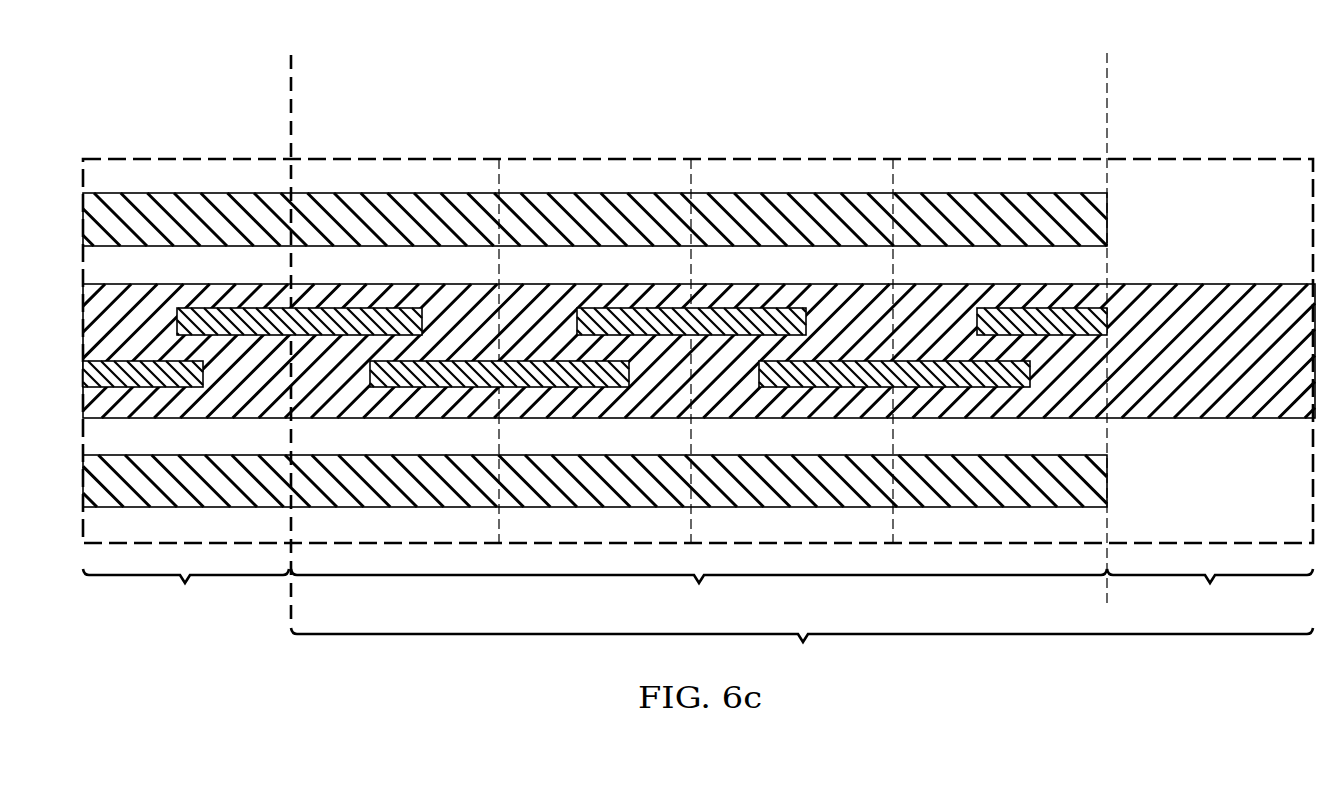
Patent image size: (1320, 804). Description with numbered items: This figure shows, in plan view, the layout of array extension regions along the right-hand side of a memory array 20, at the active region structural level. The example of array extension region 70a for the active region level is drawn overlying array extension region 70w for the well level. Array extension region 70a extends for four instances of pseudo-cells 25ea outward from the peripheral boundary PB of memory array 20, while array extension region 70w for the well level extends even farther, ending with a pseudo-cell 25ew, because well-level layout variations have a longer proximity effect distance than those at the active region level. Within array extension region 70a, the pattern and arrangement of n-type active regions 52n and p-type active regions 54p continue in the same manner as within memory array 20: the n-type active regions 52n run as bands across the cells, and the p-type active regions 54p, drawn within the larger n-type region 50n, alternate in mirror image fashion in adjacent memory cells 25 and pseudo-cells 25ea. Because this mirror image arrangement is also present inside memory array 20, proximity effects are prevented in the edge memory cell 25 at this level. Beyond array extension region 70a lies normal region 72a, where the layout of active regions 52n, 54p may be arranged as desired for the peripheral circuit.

The memory cell 25 is at (140, 154).
The peripheral boundary PB is at (290, 329).
The pseudo-cell 25ea is at (388, 154).
The pseudo-cell for the well level 25ew is at (1235, 154).
The n-type active region 52n is at (244, 205).
The n-type body layer 50n is at (1176, 290).
The p-type active region 54p is at (186, 322).
The memory array 20 is at (186, 591).
The array extension region for the active region level 70a is at (699, 593).
The normal region 72a is at (1210, 593).
The array extension region for the well level 70w is at (802, 651).